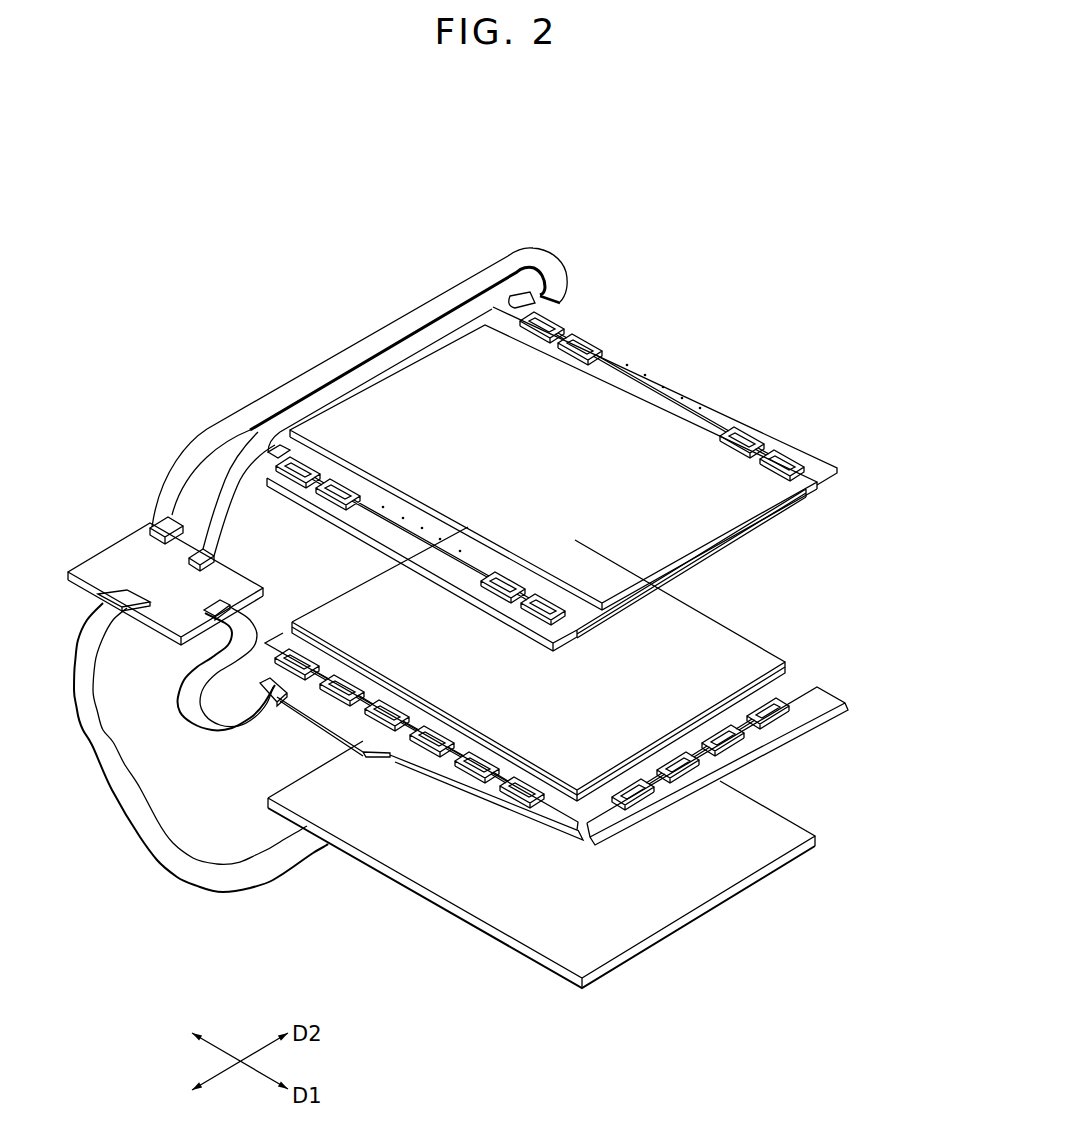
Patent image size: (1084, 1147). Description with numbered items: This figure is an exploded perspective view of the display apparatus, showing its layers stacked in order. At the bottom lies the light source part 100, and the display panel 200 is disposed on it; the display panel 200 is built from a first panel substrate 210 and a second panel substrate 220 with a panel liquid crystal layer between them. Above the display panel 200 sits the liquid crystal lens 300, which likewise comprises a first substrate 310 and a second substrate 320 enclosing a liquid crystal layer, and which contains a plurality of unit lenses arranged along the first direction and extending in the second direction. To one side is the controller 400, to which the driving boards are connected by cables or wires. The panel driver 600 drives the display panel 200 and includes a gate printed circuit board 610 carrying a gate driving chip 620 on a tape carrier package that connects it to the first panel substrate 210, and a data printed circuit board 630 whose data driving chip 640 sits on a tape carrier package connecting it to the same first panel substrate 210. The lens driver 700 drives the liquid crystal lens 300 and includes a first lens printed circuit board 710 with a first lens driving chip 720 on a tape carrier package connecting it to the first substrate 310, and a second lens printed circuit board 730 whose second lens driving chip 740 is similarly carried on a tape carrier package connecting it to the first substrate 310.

The light source part 100 is at (688, 915).
The display panel 200 is at (614, 664).
The first panel substrate 210 is at (797, 675).
The second panel substrate 220 is at (767, 647).
The liquid crystal lens 300 is at (566, 479).
The first substrate 310 is at (790, 490).
The second substrate 320 is at (722, 522).
The controller 400 is at (123, 548).
The panel driver 600 is at (461, 816).
The gate printed circuit board 610 is at (620, 817).
The gate driving chip 620 is at (613, 790).
The data printed circuit board 630 is at (500, 797).
The data driving chip 640 is at (497, 790).
The lens driver 700 is at (359, 385).
The first lens printed circuit board 710 is at (250, 455).
The first lens driving chip 720 is at (287, 457).
The second lens printed circuit board 730 is at (503, 277).
The second lens driving chip 740 is at (472, 278).